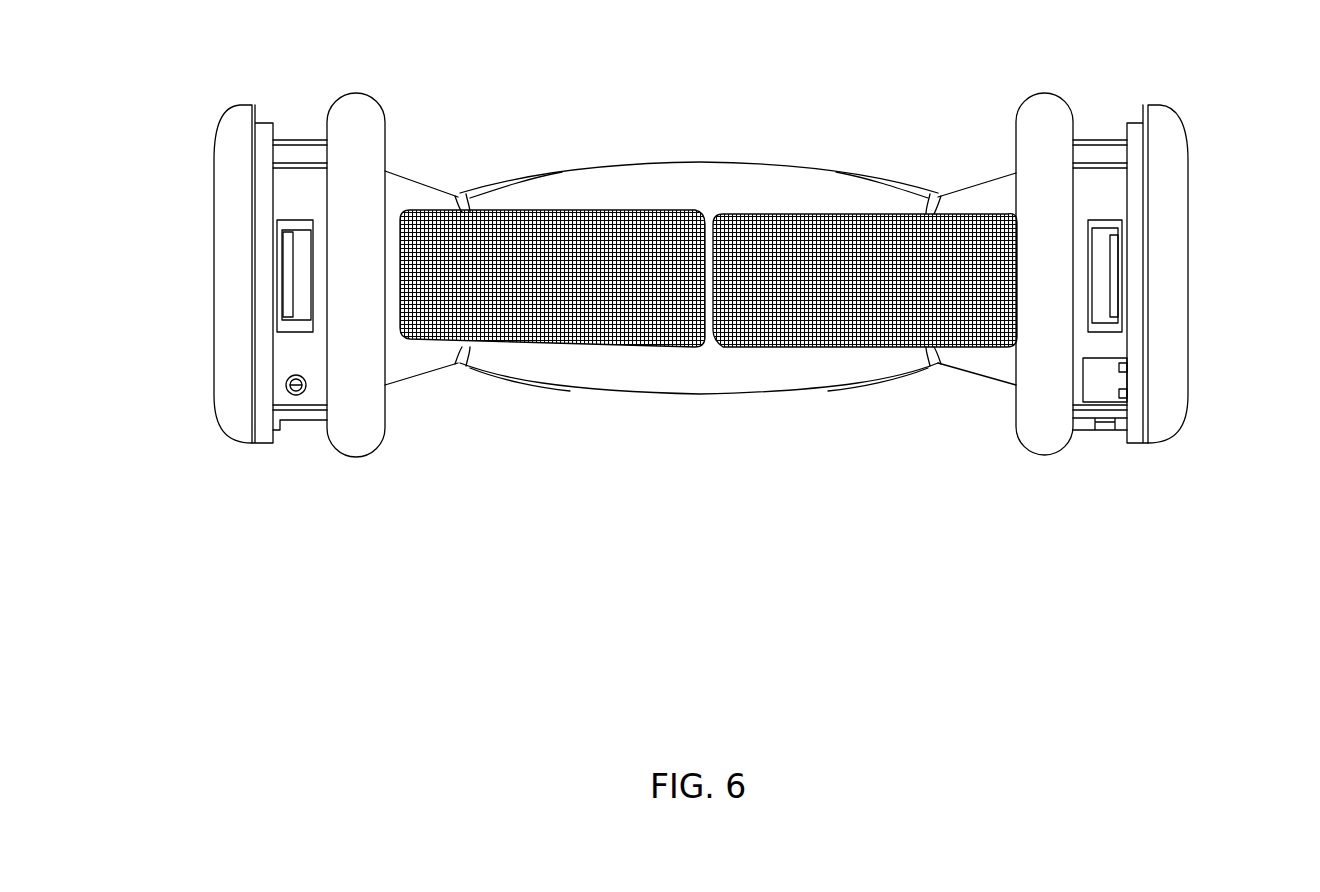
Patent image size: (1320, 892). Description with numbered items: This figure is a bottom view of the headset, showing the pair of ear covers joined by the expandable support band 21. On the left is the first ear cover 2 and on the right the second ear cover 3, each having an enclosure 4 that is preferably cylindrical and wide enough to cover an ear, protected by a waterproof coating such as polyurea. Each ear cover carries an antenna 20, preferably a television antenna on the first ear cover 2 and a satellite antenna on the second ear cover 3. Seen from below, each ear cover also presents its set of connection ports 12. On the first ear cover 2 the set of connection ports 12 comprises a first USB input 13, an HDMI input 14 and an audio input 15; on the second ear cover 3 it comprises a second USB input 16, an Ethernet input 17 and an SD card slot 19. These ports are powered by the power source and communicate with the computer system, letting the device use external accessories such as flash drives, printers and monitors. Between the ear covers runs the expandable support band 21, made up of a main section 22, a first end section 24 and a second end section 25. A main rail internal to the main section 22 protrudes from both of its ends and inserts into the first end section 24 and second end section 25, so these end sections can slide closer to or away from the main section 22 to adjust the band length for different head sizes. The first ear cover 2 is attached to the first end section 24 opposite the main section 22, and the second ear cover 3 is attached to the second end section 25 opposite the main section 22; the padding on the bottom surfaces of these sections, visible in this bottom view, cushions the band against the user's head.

The first ear cover 2 is at (697, 274).
The second ear cover 3 is at (1177, 373).
The enclosure 4 is at (697, 274).
The set of connection ports 12 is at (700, 317).
The first Universal Serial Bus (USB) input 13 is at (298, 277).
The High-Definition Multimedia Interface (HDMI) input 14 is at (300, 424).
The audio input 15 is at (307, 385).
The second USB input 16 is at (1100, 278).
The Ethernet input 17 is at (1090, 380).
The Secure Digital (SD) card slot 19 is at (1104, 430).
The antenna 20 is at (232, 272).
The expandable support band 21 is at (657, 421).
The main section 22 is at (708, 188).
The first end section 24 is at (396, 191).
The second end section 25 is at (1002, 198).